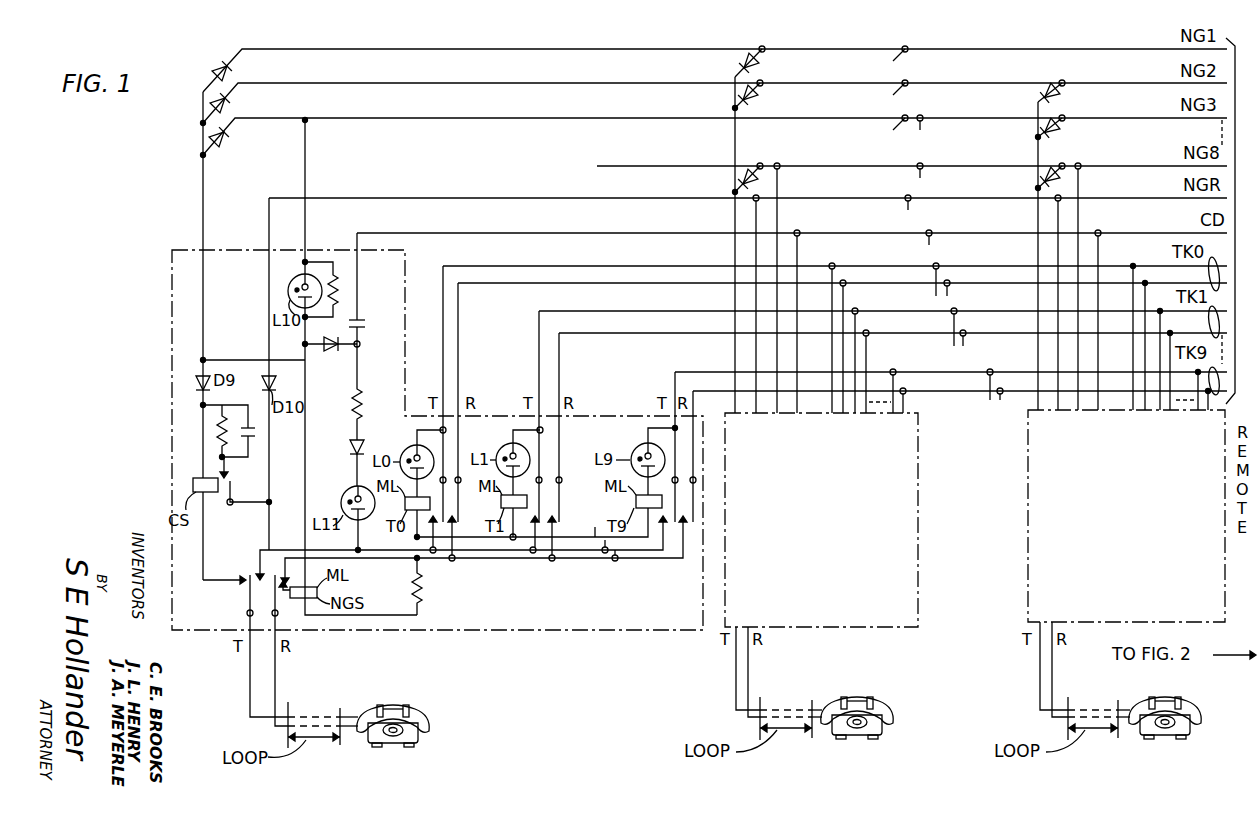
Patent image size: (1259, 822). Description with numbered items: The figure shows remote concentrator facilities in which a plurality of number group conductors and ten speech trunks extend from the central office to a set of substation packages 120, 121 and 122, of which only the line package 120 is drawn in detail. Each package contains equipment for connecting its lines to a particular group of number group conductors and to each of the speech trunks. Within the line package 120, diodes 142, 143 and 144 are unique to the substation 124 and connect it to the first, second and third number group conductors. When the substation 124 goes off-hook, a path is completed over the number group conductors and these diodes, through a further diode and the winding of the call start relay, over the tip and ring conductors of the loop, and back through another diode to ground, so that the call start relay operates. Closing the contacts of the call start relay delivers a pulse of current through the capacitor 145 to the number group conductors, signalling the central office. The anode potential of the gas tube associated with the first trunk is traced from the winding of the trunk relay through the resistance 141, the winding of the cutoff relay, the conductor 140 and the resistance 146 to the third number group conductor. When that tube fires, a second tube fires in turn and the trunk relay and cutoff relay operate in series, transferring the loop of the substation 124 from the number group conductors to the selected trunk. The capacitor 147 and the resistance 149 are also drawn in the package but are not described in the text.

The line package 120 is at (580, 630).
The substation package 121 is at (853, 627).
The substation package 122 is at (1148, 622).
The substation 124 is at (420, 706).
The conductor 140 is at (306, 410).
The resistance 141 is at (423, 578).
The diode 142 is at (231, 76).
The diode 143 is at (229, 107).
The diode 144 is at (228, 142).
The capacitor 145 is at (257, 432).
The resistance 146 is at (342, 283).
The capacitor 147 is at (366, 326).
The resistance 149 is at (363, 452).